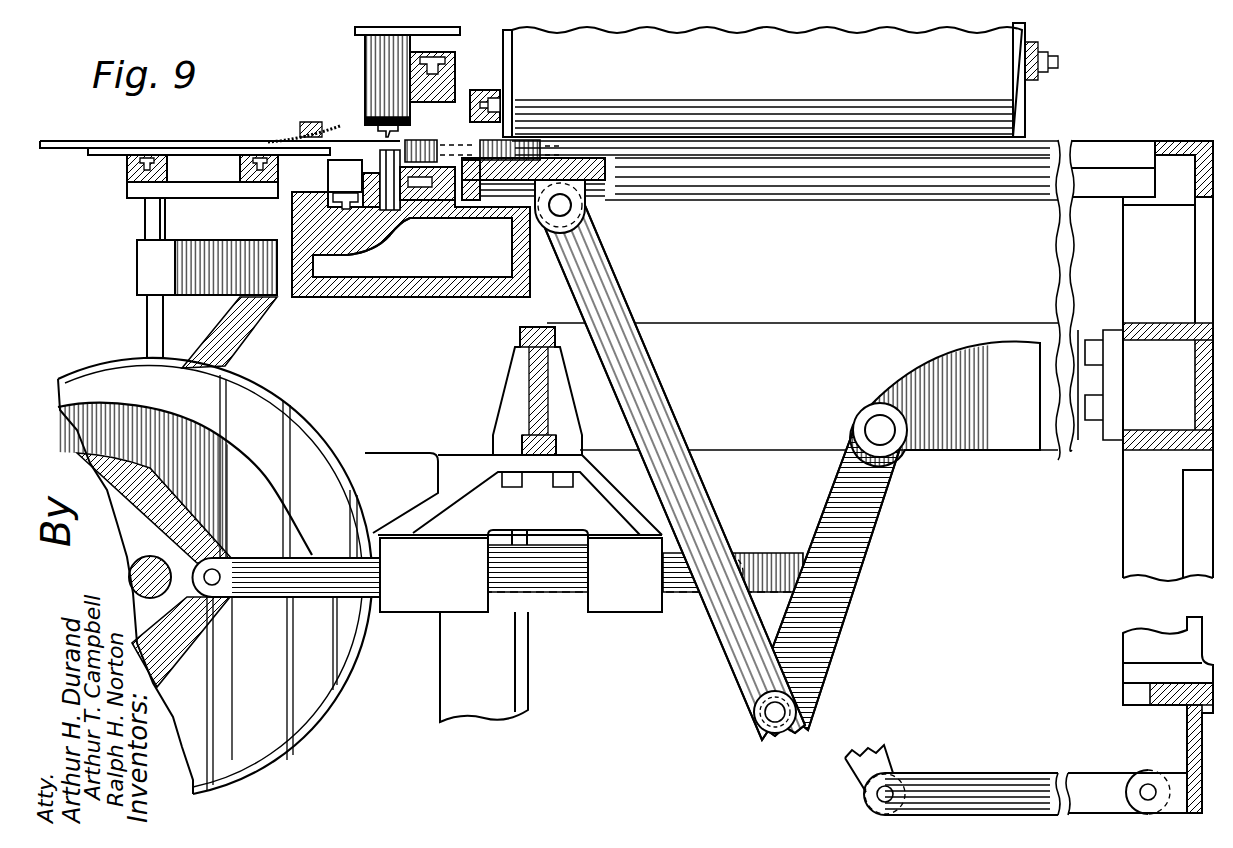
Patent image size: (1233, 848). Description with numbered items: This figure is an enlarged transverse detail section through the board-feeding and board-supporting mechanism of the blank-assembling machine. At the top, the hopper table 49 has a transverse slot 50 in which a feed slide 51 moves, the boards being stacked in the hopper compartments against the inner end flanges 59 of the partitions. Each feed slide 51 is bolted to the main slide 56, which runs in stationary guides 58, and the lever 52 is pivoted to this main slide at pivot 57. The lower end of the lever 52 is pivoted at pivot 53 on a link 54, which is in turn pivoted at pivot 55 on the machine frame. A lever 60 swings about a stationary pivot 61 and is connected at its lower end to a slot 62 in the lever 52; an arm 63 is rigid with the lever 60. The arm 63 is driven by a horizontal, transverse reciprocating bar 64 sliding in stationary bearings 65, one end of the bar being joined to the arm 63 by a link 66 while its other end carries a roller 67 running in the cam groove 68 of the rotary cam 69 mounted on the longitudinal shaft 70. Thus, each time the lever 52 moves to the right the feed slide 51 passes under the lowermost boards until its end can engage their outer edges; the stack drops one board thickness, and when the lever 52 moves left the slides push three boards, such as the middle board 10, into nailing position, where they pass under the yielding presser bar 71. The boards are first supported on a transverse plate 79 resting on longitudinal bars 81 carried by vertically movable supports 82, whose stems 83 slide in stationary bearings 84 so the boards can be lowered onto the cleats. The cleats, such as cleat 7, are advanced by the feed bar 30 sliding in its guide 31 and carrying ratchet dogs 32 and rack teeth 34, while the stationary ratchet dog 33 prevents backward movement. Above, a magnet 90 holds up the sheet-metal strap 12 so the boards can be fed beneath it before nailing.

The cleat 7 is at (396, 212).
The board 10 is at (120, 131).
The sheet-metal strap 12 is at (386, 102).
The feed bar 30 is at (326, 205).
The guide 31 is at (313, 213).
The ratchet dog 32 is at (370, 165).
The stationary ratchet dog 33 is at (420, 190).
The rack teeth 34 is at (348, 250).
The table 49 is at (1128, 141).
The slot 50 is at (1044, 145).
The feed slide 51 is at (438, 150).
The lever 52 is at (642, 375).
The pivot 53 is at (890, 790).
The link 54 is at (1005, 780).
The pivot 55 is at (1144, 790).
The main slide 56 is at (600, 188).
The pivot 57 is at (566, 211).
The guide 58 is at (950, 168).
The inner end flange 59 is at (510, 70).
The lever 60 is at (836, 597).
The pivot 61 is at (886, 440).
The slot 62 is at (768, 730).
The arm 63 is at (880, 532).
The reciprocating bar 64 is at (550, 592).
The bearing 65 is at (412, 612).
The link 66 is at (776, 560).
The roller 67 is at (216, 566).
The cam groove 68 is at (196, 650).
The rotary cam 69 is at (326, 690).
The shaft 70 is at (150, 586).
The presser bar 71 is at (284, 139).
The plate 79 is at (193, 150).
The bar 81 is at (127, 172).
The vertically movable support 82 is at (140, 188).
The stem 83 is at (148, 226).
The stationary bearing 84 is at (143, 258).
The magnet 90 is at (372, 58).